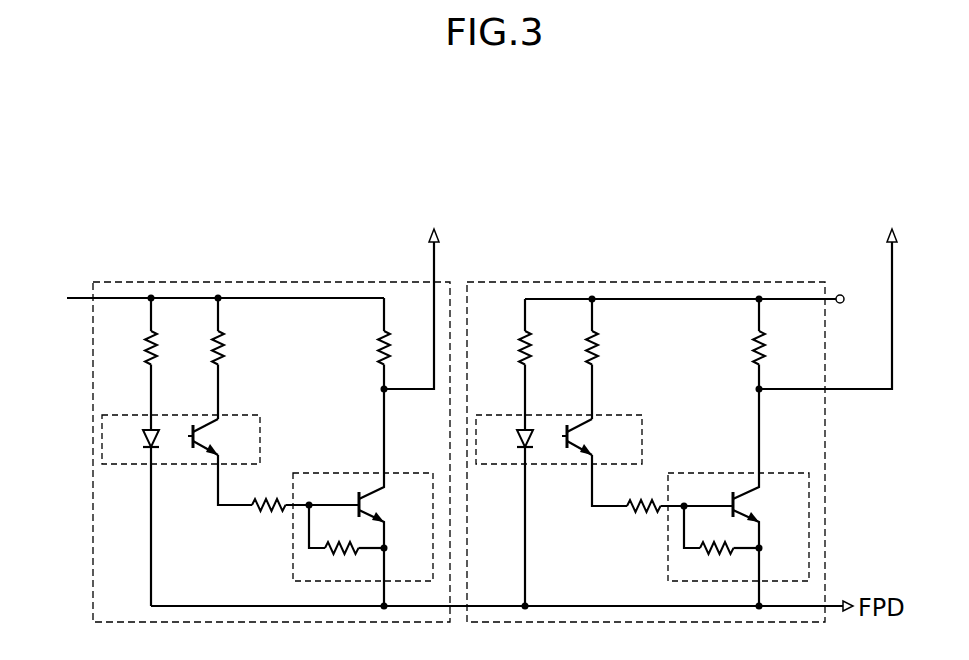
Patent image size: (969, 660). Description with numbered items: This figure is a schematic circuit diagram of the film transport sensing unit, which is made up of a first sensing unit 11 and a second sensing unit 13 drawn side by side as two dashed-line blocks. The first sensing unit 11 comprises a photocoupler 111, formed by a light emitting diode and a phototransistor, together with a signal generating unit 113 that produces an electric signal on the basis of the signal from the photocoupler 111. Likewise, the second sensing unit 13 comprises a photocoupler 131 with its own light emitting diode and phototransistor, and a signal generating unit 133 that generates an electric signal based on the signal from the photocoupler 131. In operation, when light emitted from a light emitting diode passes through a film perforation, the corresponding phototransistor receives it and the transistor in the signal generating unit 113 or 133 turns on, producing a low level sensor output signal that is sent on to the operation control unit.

The first sensing unit 11 is at (287, 282).
The second sensing unit 13 is at (658, 282).
The photocoupler 111 is at (260, 437).
The signal generating unit 113 is at (293, 553).
The photocoupler 131 is at (642, 437).
The signal generating unit 133 is at (668, 553).